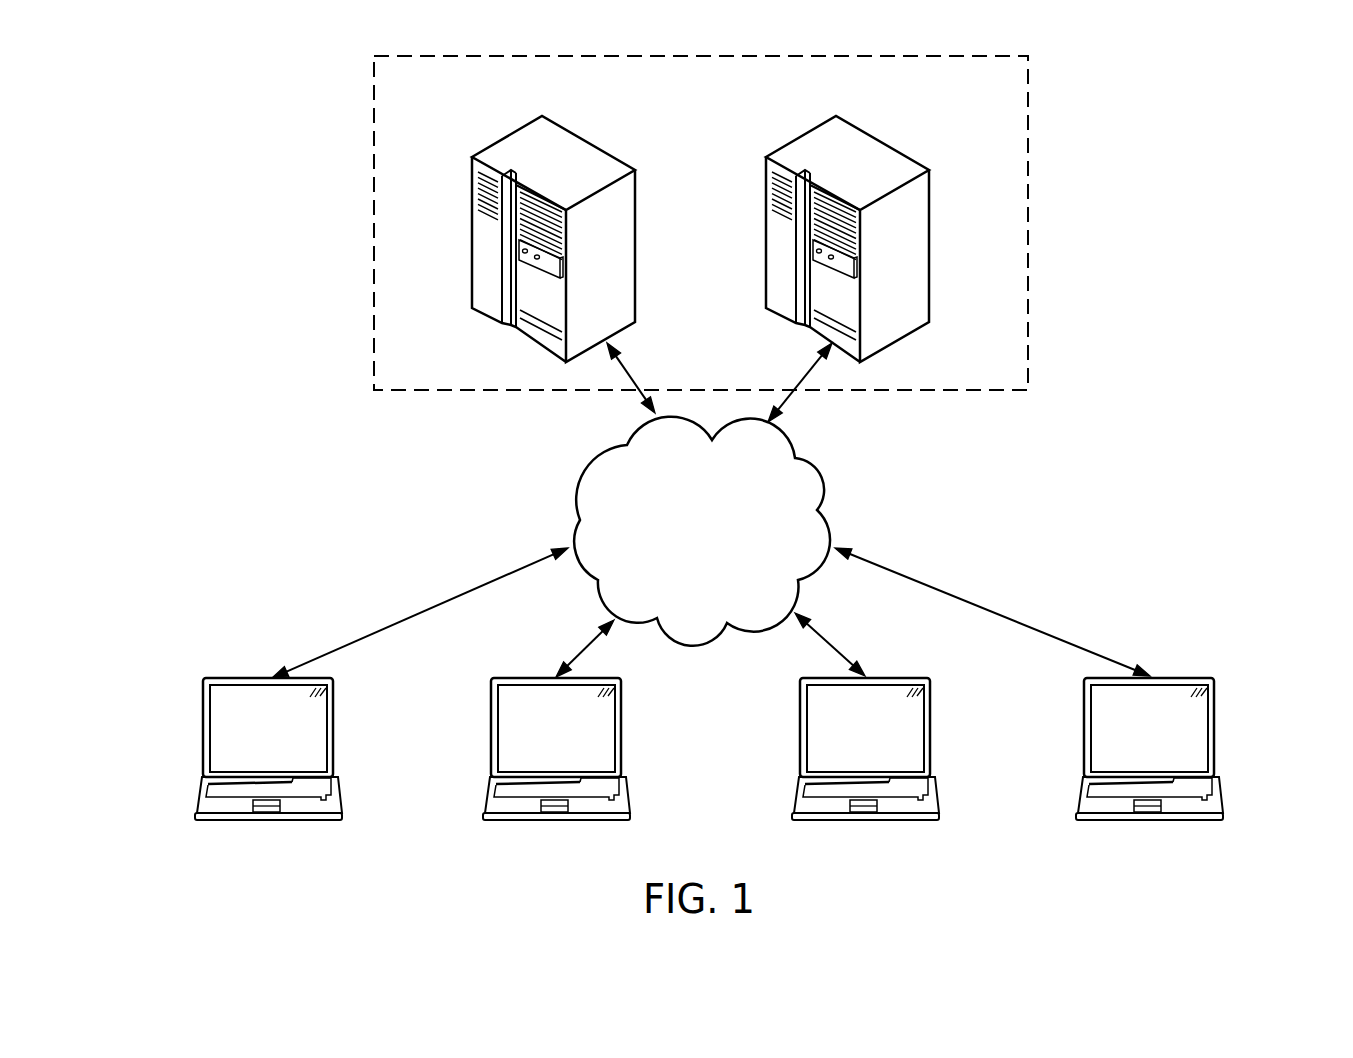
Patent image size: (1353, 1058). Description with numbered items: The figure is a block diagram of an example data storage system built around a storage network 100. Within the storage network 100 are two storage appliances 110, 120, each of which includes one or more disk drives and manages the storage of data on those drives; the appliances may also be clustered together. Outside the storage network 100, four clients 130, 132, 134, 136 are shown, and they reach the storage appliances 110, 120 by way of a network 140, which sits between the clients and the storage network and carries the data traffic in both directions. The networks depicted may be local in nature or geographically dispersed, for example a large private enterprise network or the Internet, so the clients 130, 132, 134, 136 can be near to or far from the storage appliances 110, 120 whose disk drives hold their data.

The storage network 100 is at (718, 122).
The storage appliance 110 is at (929, 238).
The storage appliance 120 is at (472, 243).
The client 130 is at (203, 727).
The client 132 is at (491, 726).
The client 134 is at (930, 713).
The client 136 is at (1214, 713).
The network 140 is at (718, 554).